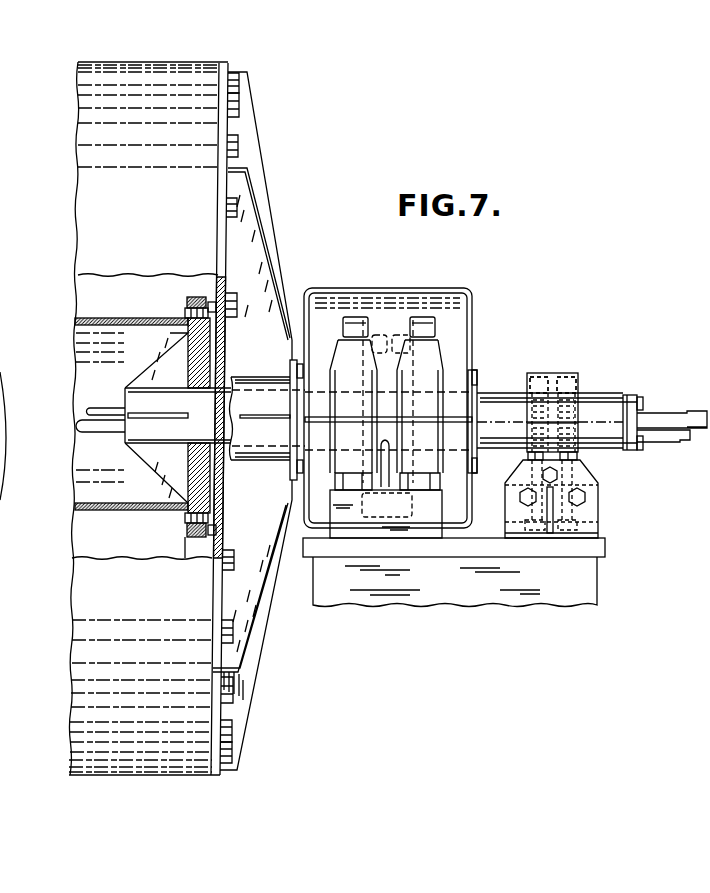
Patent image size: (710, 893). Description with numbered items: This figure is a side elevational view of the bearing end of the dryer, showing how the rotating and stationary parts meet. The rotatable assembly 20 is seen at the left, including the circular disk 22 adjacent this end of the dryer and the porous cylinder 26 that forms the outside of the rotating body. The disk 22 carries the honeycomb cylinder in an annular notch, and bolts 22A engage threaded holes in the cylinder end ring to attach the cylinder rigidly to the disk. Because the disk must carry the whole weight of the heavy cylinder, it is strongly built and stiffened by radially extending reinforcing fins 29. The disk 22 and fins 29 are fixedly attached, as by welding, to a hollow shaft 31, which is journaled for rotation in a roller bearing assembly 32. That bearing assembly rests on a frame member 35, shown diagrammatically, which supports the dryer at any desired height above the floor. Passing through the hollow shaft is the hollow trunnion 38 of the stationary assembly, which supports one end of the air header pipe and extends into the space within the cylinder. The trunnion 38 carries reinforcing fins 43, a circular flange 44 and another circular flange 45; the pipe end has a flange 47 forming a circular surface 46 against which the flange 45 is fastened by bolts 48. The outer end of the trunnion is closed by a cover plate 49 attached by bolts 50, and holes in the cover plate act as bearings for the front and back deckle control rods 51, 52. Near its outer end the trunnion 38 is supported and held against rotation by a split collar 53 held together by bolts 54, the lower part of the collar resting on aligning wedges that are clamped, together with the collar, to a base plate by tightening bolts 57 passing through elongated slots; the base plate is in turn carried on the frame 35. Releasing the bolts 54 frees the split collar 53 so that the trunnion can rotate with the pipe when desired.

The rotatable assembly 20 is at (125, 402).
The circular disk 22 is at (212, 612).
The bolts 22A is at (232, 557).
The porous cylinder 26 is at (160, 70).
The reinforcing fins 29 is at (252, 210).
The hollow shaft 31 is at (251, 377).
The roller bearing assembly 32 is at (482, 300).
The frame member 35 is at (479, 557).
The hollow trunnion 38 is at (498, 393).
The reinforcing fins 43 is at (160, 415).
The circular flange 44 is at (183, 517).
The circular flange 45 is at (206, 489).
The circular surface 46 is at (186, 537).
The flange 47 is at (186, 300).
The bolts 48 is at (213, 302).
The cover plate 49 is at (627, 395).
The bolts 50 is at (638, 452).
The front deckle control rod 51 is at (108, 407).
The back deckle control rod 52 is at (98, 433).
The split collar 53 is at (553, 373).
The bolts 54 is at (536, 372).
The tightening bolts 57 is at (527, 456).